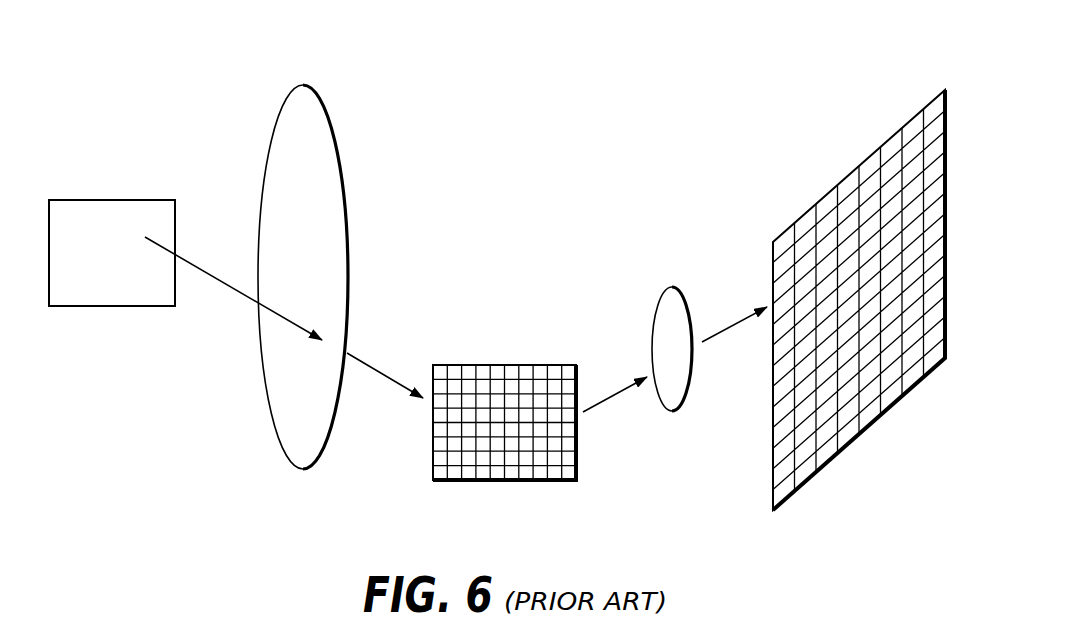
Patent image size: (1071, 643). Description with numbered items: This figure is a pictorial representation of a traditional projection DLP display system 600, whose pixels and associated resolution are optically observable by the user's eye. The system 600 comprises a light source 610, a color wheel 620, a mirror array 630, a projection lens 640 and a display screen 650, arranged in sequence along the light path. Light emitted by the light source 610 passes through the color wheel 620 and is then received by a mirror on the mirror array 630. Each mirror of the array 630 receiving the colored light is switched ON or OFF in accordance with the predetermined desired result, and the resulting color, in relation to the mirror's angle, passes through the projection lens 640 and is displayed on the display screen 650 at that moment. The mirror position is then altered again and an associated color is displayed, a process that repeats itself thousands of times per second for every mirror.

The traditional projection DLP display system 600 is at (698, 79).
The light source 610 is at (108, 306).
The color wheel 620 is at (348, 215).
The mirror array 630 is at (495, 482).
The projection lens 640 is at (658, 305).
The display screen 650 is at (863, 432).